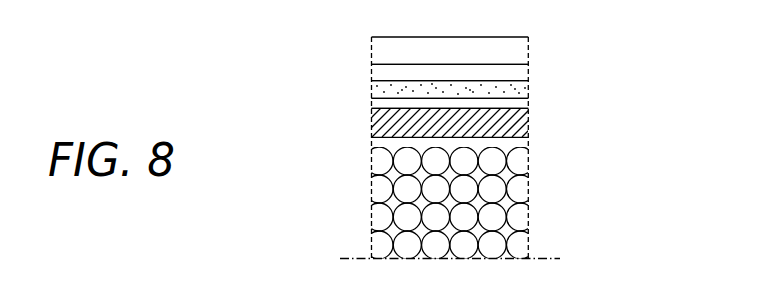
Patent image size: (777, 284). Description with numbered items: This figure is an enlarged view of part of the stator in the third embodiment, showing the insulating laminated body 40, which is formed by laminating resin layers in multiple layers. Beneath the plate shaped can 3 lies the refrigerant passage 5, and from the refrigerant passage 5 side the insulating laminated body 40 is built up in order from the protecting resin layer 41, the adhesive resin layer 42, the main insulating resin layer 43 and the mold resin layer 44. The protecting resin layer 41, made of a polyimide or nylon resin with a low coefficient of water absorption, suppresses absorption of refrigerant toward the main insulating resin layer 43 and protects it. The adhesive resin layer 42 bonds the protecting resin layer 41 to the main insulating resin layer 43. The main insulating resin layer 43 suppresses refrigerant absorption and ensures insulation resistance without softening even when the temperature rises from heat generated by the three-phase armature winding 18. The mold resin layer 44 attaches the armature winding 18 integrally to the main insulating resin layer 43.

The can 3 is at (382, 54).
The refrigerant passage 5 is at (375, 71).
The three-phase armature winding 18 is at (375, 167).
The insulating laminated body 40 is at (530, 152).
The protecting resin layer 41 is at (517, 89).
The adhesive resin layer 42 is at (523, 106).
The main insulating resin layer 43 is at (523, 135).
The mold resin layer 44 is at (499, 202).